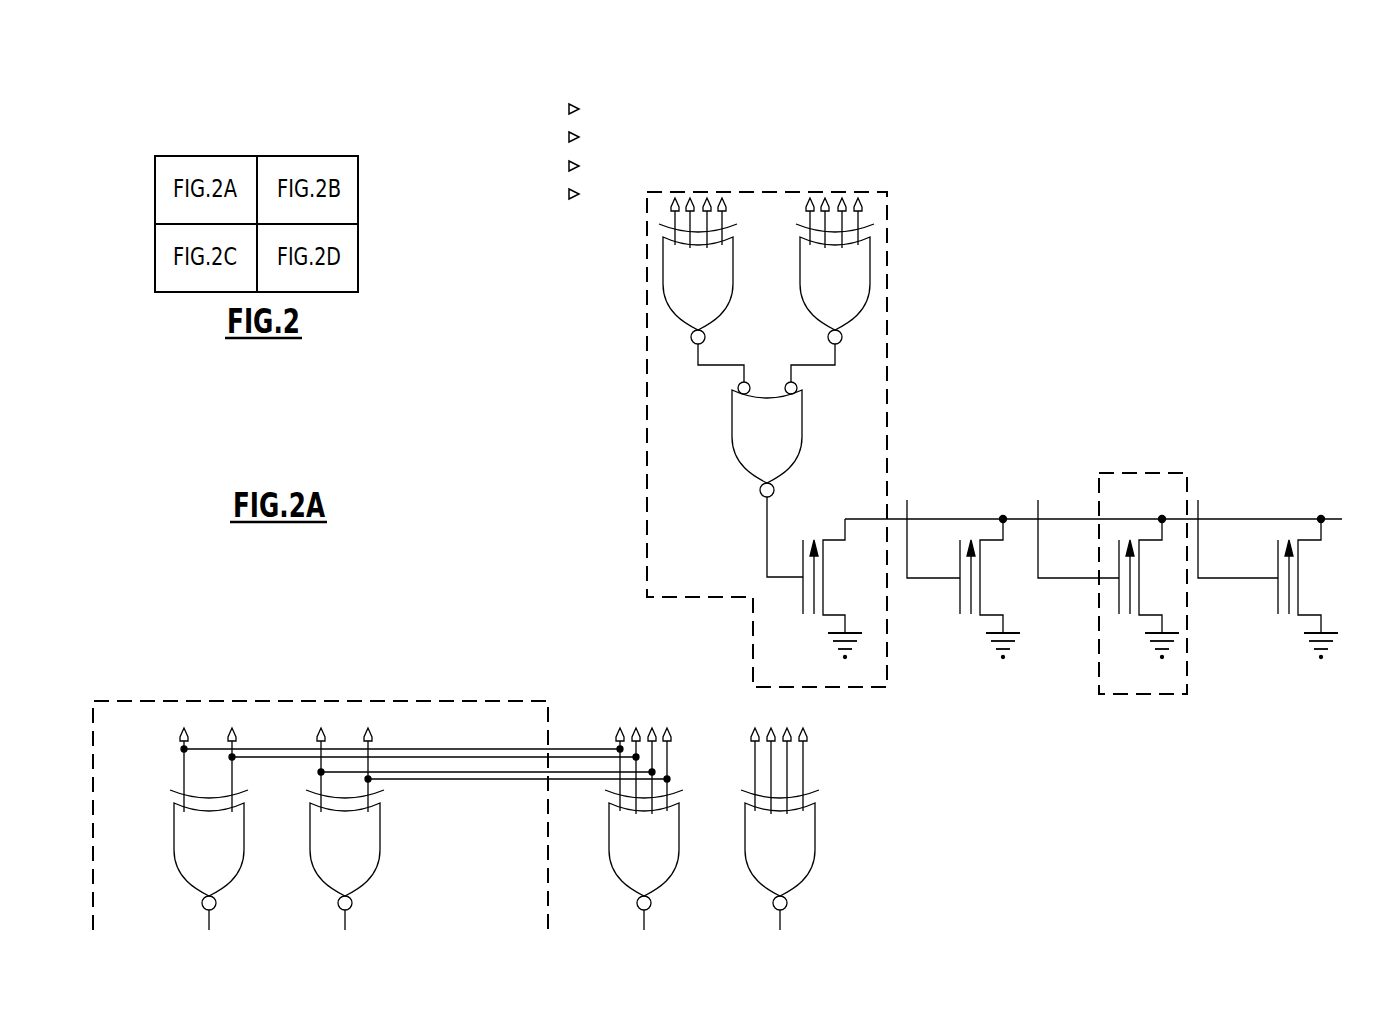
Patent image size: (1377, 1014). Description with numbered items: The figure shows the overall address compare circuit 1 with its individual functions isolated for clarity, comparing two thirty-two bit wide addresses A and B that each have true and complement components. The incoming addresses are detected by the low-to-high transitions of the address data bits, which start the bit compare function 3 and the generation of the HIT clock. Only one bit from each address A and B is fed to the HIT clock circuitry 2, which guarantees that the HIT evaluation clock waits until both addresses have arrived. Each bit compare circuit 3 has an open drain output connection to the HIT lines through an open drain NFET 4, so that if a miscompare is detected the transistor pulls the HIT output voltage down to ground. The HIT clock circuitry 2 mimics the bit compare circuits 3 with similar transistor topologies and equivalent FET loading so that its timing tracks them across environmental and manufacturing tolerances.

The compare circuit 1 is at (460, 462).
The HIT clock circuitry 2 is at (174, 701).
The bit compare circuit 3 is at (647, 278).
The open drain NFET 4 is at (1128, 473).